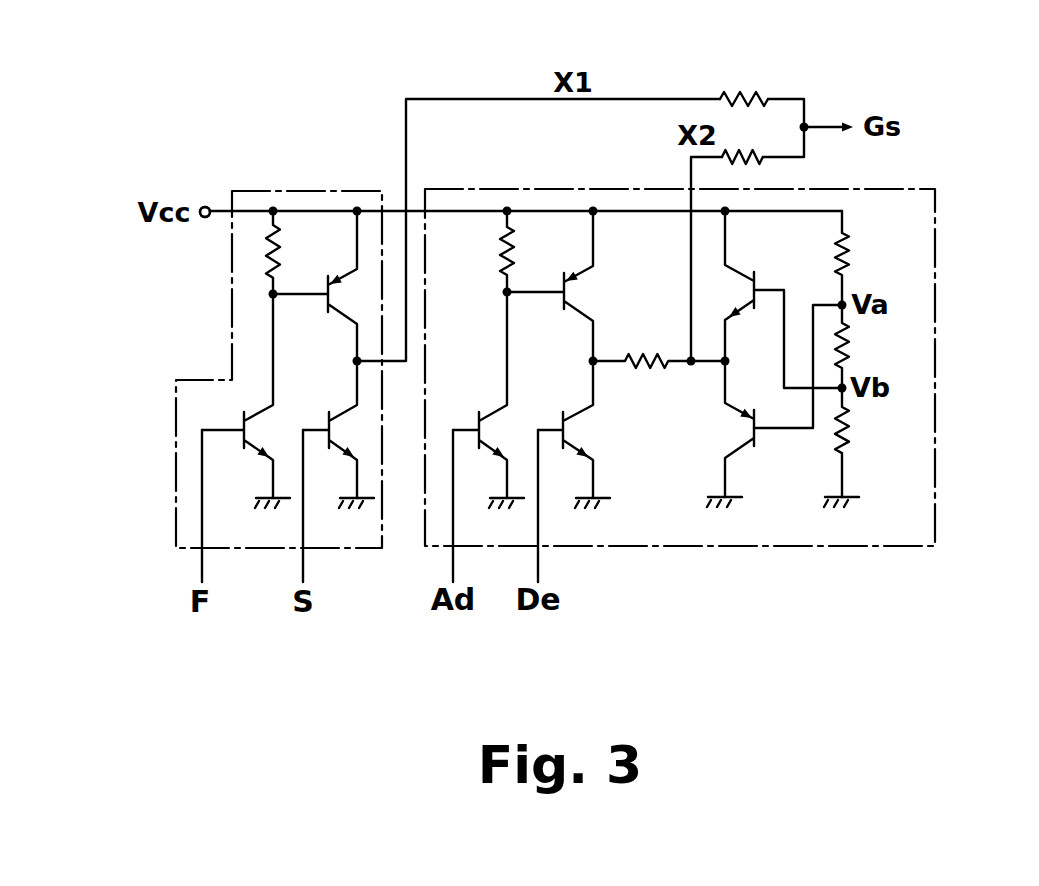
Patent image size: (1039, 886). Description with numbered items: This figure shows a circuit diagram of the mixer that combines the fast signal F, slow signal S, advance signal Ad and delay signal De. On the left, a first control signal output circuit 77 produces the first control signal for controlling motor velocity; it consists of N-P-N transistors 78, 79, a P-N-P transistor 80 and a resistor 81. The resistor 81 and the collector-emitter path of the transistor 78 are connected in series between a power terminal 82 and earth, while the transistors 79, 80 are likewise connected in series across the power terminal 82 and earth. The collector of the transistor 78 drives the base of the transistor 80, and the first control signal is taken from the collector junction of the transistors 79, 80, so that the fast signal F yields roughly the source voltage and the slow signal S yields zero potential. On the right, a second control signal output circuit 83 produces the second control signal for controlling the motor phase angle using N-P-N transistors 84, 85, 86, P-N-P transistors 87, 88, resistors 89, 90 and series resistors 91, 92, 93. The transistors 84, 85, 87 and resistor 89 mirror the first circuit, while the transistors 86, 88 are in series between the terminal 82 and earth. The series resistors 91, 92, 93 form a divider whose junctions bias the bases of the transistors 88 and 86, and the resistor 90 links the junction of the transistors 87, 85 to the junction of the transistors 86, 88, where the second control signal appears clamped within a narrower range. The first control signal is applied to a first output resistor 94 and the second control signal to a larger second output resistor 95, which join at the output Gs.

The first control signal output circuit 77 is at (232, 313).
The N-P-N transistor 78 is at (248, 452).
The N-P-N transistor 79 is at (340, 412).
The P-N-P transistor 80 is at (346, 302).
The resistor 81 is at (282, 253).
The power terminal 82 is at (205, 205).
The second control signal output circuit 83 is at (935, 200).
The N-P-N transistor 84 is at (490, 412).
The N-P-N transistor 85 is at (583, 432).
The N-P-N transistor 86 is at (736, 268).
The P-N-P transistor 87 is at (580, 290).
The P-N-P transistor 88 is at (740, 450).
The resistor 89 is at (500, 258).
The resistor 90 is at (650, 365).
The series resistor 91 is at (849, 265).
The series resistor 92 is at (849, 355).
The series resistor 93 is at (849, 437).
The first output resistor 94 is at (740, 86).
The second output resistor 95 is at (765, 164).